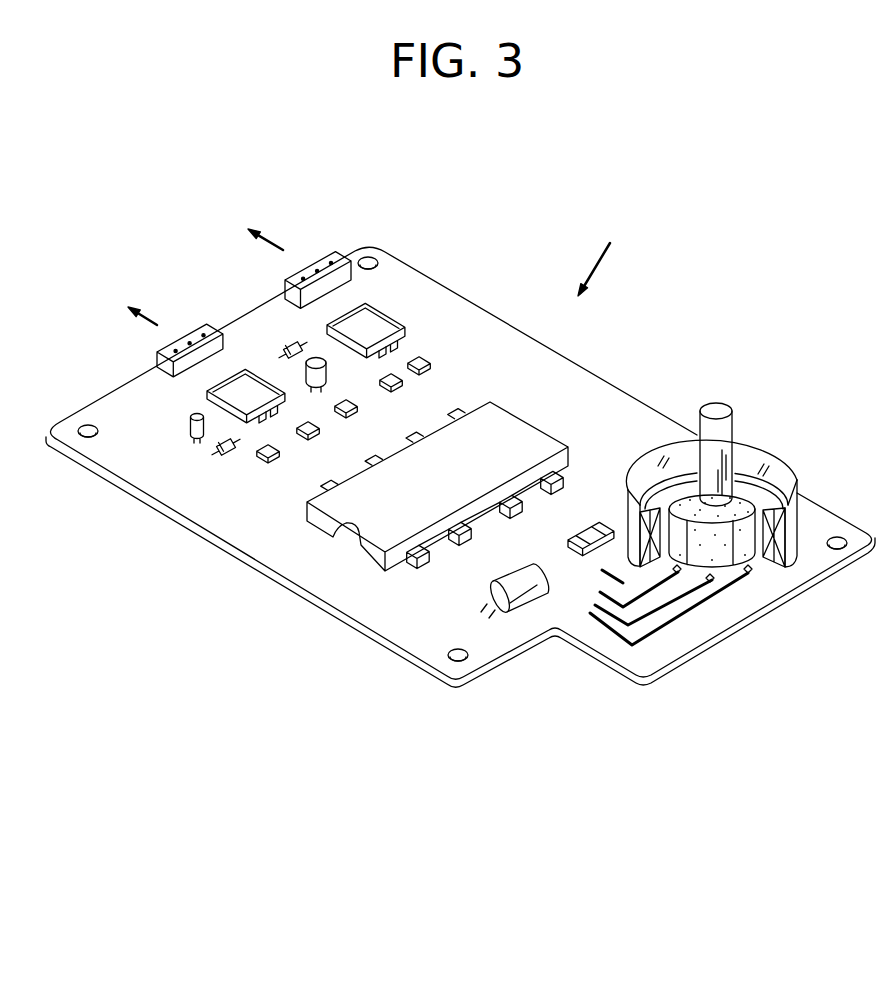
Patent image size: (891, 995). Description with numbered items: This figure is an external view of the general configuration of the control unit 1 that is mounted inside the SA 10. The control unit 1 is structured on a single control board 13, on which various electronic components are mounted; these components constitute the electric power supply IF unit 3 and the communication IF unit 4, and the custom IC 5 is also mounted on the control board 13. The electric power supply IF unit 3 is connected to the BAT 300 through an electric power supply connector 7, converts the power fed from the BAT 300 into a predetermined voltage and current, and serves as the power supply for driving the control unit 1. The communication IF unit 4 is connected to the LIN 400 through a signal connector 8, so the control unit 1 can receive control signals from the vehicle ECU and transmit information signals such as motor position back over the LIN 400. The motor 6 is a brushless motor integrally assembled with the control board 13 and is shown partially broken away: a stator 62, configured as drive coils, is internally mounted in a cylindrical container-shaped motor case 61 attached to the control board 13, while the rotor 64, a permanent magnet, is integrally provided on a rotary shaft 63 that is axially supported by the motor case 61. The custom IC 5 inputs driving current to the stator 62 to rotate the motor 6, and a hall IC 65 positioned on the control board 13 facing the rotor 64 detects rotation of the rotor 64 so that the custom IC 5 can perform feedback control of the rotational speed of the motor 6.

The control unit 1 is at (459, 292).
The electric power supply IF unit 3 is at (408, 330).
The communication IF unit 4 is at (197, 452).
The custom IC 5 is at (343, 507).
The motor 6 is at (729, 518).
The electric power supply connector 7 is at (313, 255).
The signal connector 8 is at (156, 350).
The SA 10 is at (610, 255).
The control board 13 is at (438, 650).
The motor case 61 is at (778, 475).
The stator 62 is at (787, 540).
The rotary shaft 63 is at (715, 408).
The rotor 64 is at (747, 550).
The hall IC 65 is at (749, 574).
The BAT 300 is at (243, 224).
The LIN 400 is at (128, 300).